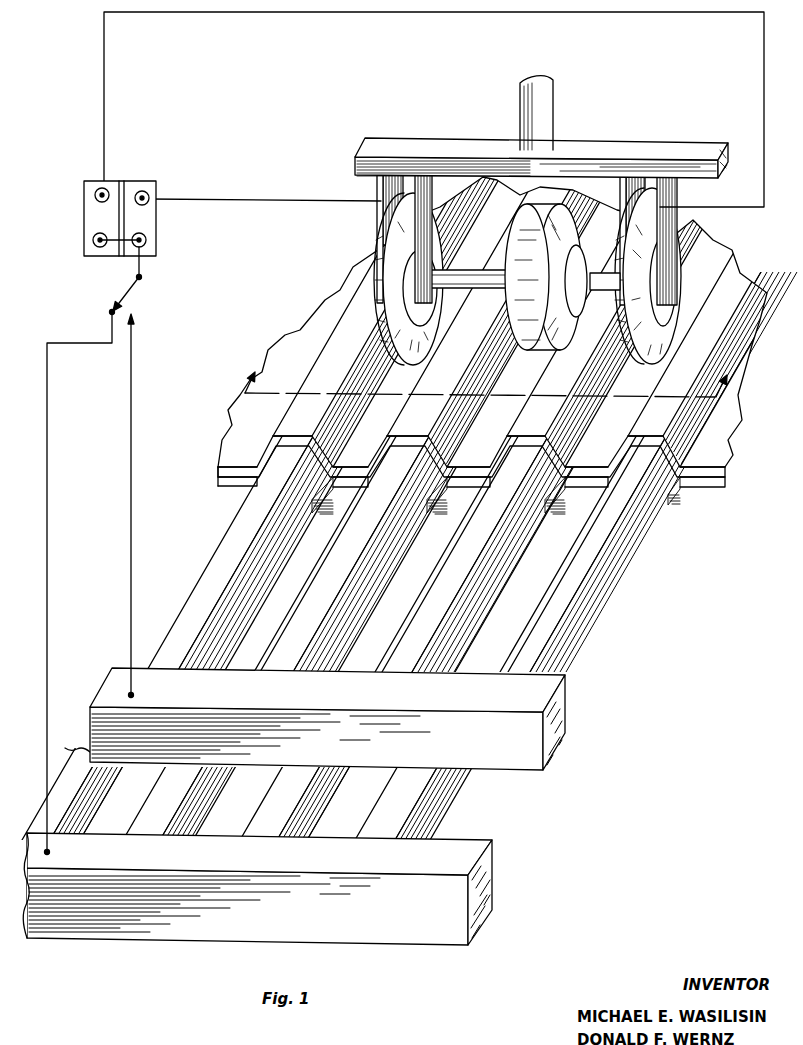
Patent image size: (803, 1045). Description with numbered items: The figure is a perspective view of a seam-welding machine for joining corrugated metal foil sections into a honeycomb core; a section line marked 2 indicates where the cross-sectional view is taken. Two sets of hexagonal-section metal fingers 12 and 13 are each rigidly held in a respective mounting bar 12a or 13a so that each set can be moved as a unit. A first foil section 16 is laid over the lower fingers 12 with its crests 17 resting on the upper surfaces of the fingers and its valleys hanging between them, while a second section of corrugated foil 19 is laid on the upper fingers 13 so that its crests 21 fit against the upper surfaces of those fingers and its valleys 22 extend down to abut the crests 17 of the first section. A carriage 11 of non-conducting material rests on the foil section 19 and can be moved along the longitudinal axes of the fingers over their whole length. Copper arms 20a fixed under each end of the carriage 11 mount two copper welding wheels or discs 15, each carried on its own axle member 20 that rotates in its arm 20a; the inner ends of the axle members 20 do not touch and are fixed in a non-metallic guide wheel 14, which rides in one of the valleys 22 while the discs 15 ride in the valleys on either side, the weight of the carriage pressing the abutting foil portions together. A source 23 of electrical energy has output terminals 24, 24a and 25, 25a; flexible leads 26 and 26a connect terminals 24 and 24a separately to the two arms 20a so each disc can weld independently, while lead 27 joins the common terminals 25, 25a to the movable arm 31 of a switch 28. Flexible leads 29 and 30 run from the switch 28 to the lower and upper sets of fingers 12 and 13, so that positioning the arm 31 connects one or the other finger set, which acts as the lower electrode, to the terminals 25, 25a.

The carriage 11 is at (690, 150).
The metal fingers 12 is at (145, 797).
The mounting bar 12a is at (490, 886).
The metal fingers 13 is at (213, 562).
The mounting bar 13a is at (563, 723).
The guide wheel 14 is at (565, 216).
The welding wheels or discs 15 is at (390, 327).
The first foil section 16 is at (216, 478).
The crests 17 is at (238, 484).
The second section of corrugated foil 19 is at (247, 427).
The axle member 20 is at (485, 283).
The copper arms 20a is at (680, 202).
The crests 21 is at (295, 438).
The valleys 22 is at (240, 466).
The source of electrical energy 23 is at (90, 215).
The output terminal 24 is at (146, 196).
The output terminal 24a is at (100, 190).
The output terminal 25 is at (147, 240).
The output terminal 25a is at (96, 246).
The flexible lead 26 is at (283, 203).
The flexible lead 26a is at (330, 15).
The lead 27 is at (141, 262).
The switch 28 is at (165, 330).
The flexible lead 29 is at (47, 583).
The flexible lead 30 is at (133, 518).
The movable arm 31 is at (128, 292).
The section line 2 is at (491, 373).